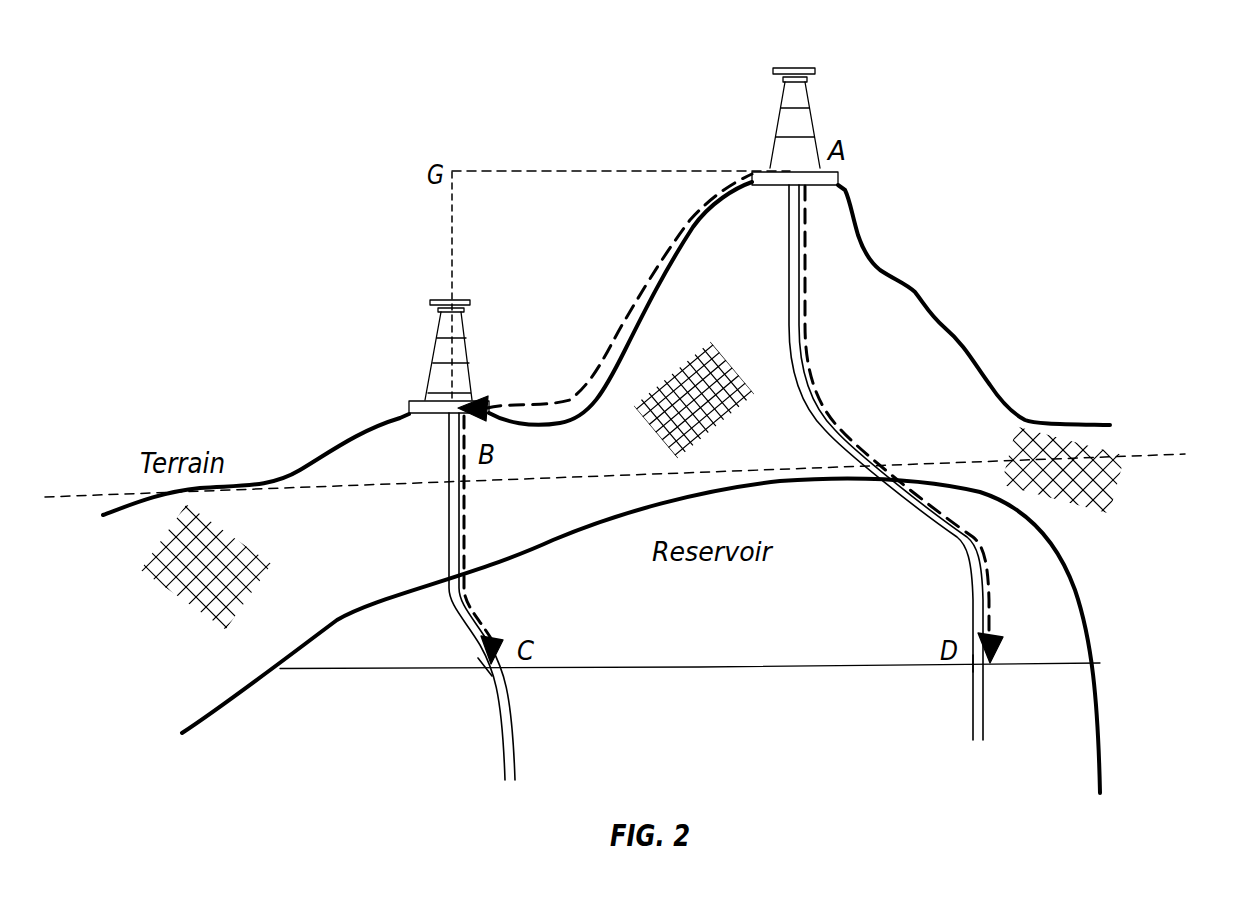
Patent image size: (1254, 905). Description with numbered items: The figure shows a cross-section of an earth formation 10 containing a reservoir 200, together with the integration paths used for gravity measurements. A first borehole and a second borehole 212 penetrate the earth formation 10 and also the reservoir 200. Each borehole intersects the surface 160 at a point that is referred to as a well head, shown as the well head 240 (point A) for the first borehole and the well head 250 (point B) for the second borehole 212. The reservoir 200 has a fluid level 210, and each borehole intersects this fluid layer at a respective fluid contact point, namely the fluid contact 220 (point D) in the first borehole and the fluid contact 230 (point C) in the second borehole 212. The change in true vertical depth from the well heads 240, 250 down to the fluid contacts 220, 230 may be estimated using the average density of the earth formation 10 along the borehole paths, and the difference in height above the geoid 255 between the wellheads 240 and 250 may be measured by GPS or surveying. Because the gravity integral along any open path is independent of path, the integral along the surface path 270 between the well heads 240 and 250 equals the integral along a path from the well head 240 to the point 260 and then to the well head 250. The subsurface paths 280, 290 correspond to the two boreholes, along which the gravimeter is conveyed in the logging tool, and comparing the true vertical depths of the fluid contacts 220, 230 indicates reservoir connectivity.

The earth formation 10 is at (160, 580).
The surface 160 is at (146, 490).
The reservoir 200 is at (1068, 580).
The fluid level 210 is at (395, 668).
The second borehole 212 is at (445, 470).
The fluid contact point 220 is at (975, 665).
The fluid contact point 230 is at (483, 667).
The well head 240 is at (796, 170).
The well head 250 is at (440, 395).
The geoid 255 is at (1172, 455).
The point 260 is at (456, 170).
The surface path 270 is at (650, 290).
The path 280 is at (822, 398).
The path 290 is at (468, 552).